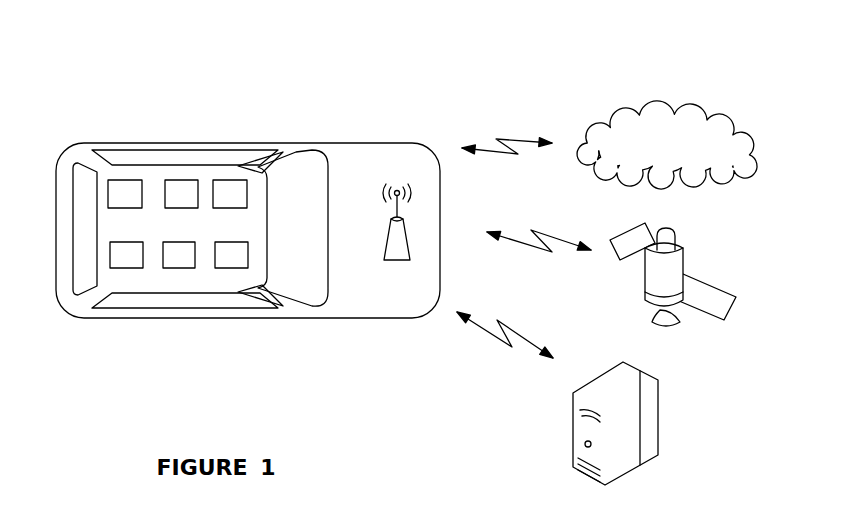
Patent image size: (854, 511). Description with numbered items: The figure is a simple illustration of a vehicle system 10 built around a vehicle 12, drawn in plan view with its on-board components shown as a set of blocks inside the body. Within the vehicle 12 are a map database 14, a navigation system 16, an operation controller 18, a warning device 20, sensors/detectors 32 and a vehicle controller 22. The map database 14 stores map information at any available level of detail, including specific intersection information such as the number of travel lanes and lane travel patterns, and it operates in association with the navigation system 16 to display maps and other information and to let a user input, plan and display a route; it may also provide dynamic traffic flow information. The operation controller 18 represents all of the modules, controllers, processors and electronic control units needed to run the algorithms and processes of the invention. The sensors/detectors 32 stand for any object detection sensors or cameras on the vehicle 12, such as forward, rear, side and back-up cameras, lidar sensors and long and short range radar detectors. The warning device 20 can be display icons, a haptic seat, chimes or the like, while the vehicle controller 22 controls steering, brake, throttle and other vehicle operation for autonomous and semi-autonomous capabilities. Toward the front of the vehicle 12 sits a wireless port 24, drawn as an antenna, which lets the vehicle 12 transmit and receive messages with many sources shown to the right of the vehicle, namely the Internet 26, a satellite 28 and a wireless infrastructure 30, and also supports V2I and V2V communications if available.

The vehicle system 10 is at (410, 60).
The vehicle 12 is at (380, 318).
The map database 14 is at (127, 180).
The navigation system 16 is at (110, 255).
The operation controller 18 is at (180, 268).
The warning device 20 is at (232, 180).
The vehicle controller 22 is at (233, 268).
The wireless port 24 is at (381, 243).
The Internet 26 is at (745, 168).
The satellite 28 is at (690, 262).
The wireless infrastructure 30 is at (640, 368).
The sensors/detectors 32 is at (181, 180).